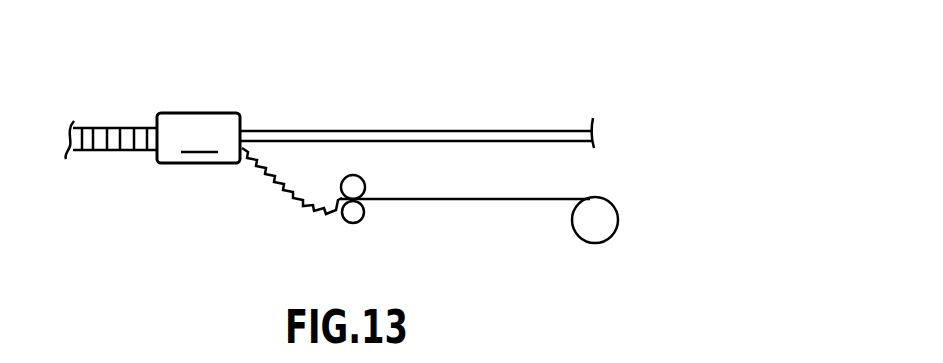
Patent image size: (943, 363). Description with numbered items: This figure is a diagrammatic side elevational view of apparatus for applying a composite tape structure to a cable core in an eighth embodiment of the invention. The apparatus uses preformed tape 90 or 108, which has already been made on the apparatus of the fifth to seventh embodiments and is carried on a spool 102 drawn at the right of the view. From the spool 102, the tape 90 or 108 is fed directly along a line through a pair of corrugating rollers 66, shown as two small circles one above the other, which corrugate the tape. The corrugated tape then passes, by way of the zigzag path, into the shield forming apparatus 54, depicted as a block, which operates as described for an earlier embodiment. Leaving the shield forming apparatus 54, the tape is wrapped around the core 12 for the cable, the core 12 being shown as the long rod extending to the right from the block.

The core 12 is at (507, 128).
The shield forming apparatus 54 is at (152, 138).
The corrugating rollers 66 is at (346, 222).
The preformed tape 90 is at (465, 229).
The preformed tape 108 is at (493, 200).
The spool 102 is at (612, 231).